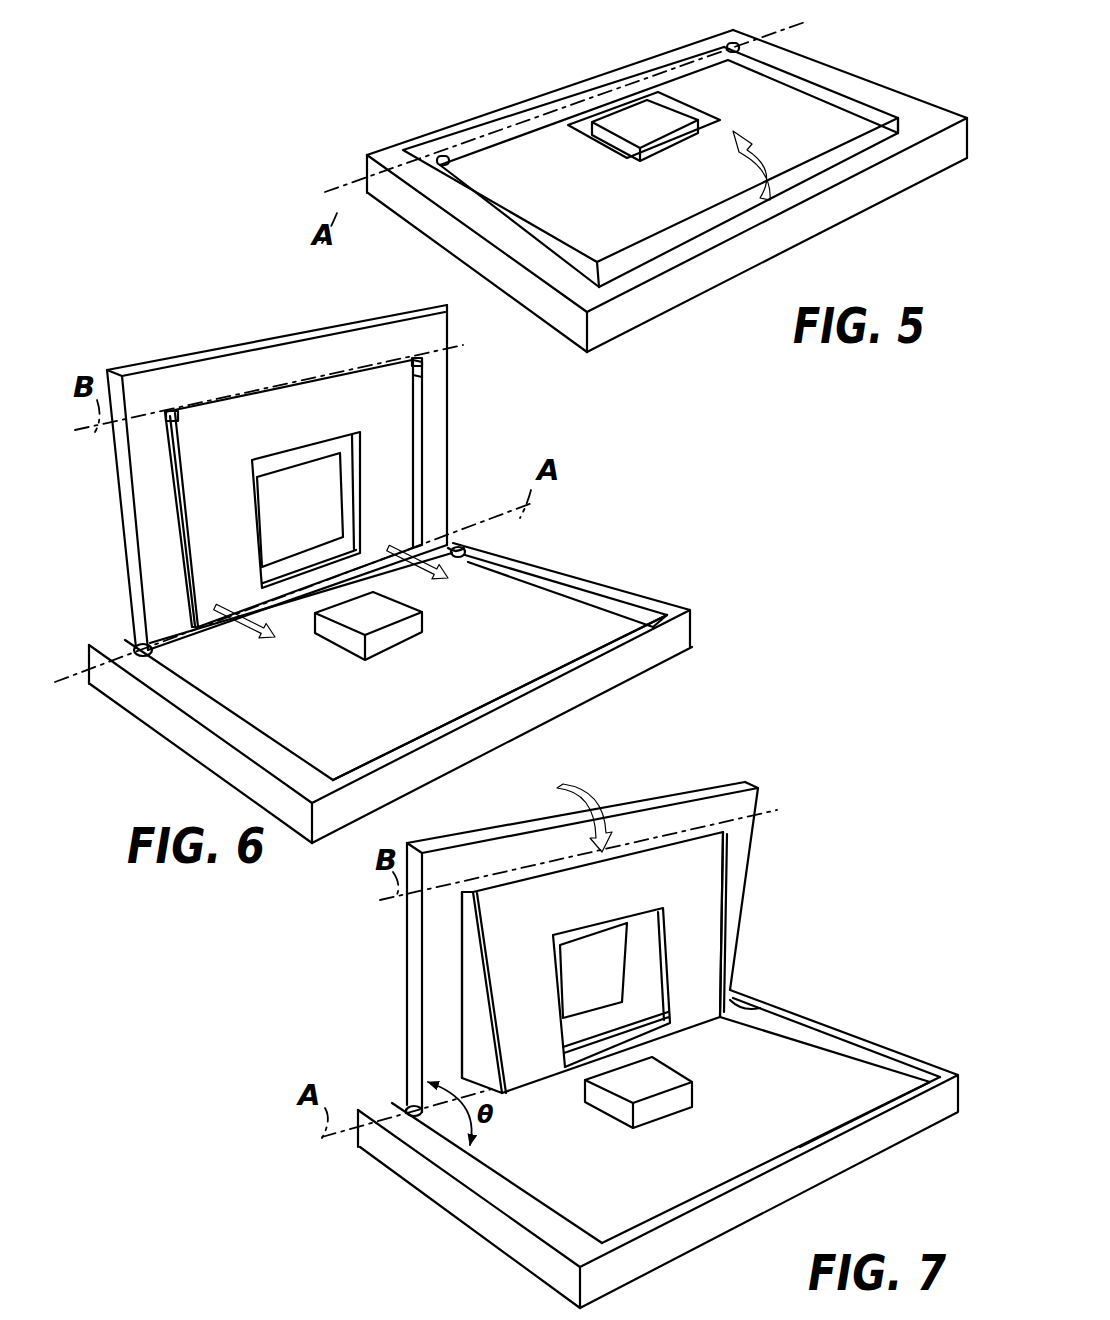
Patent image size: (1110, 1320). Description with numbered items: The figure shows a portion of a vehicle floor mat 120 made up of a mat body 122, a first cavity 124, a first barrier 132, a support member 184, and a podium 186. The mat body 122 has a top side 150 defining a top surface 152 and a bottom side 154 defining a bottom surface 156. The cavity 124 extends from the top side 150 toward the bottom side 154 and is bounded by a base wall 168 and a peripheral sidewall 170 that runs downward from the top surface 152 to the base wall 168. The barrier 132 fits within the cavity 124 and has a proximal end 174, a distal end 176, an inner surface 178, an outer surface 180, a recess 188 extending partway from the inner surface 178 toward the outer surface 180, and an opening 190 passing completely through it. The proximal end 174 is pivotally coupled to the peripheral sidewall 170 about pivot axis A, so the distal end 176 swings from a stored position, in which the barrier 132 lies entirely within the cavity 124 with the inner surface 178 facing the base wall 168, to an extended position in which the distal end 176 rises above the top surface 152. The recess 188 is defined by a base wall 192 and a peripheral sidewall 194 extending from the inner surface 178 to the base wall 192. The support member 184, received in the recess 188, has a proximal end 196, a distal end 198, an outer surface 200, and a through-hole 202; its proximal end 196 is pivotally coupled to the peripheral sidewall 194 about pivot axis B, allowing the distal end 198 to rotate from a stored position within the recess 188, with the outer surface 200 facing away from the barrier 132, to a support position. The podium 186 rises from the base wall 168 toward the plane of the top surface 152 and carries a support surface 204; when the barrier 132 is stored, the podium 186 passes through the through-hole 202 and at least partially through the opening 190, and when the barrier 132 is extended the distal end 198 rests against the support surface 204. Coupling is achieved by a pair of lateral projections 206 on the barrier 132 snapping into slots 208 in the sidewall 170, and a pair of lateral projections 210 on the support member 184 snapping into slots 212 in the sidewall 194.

In FIG. 5, the vehicle floor mat 120 is at (510, 63).
In FIG. 5, the mat body 122 is at (365, 167).
In FIG. 6, the mat body 122 is at (692, 627).
In FIG. 7, the mat body 122 is at (430, 1190).
In FIG. 5, the first cavity 124 is at (824, 83).
In FIG. 6, the first cavity 124 is at (568, 641).
In FIG. 7, the first cavity 124 is at (679, 1192).
In FIG. 5, the first barrier 132 is at (655, 252).
In FIG. 6, the first barrier 132 is at (188, 357).
In FIG. 7, the first barrier 132 is at (748, 782).
In FIG. 5, the top side 150 is at (396, 148).
In FIG. 6, the top side 150 is at (672, 605).
In FIG. 5, the top surface 152 is at (553, 273).
In FIG. 6, the top surface 152 is at (247, 738).
In FIG. 7, the top surface 152 is at (533, 1215).
In FIG. 5, the bottom side 154 is at (425, 240).
In FIG. 6, the bottom side 154 is at (135, 719).
In FIG. 5, the bottom surface 156 is at (630, 332).
In FIG. 5, the base wall 168 is at (897, 150).
In FIG. 6, the base wall 168 is at (368, 732).
In FIG. 7, the base wall 168 is at (635, 1206).
In FIG. 5, the peripheral sidewall 170 is at (906, 128).
In FIG. 6, the peripheral sidewall 170 is at (607, 605).
In FIG. 7, the peripheral sidewall 170 is at (857, 1060).
In FIG. 5, the proximal end 174 is at (617, 80).
In FIG. 6, the proximal end 174 is at (204, 648).
In FIG. 5, the distal end 176 is at (805, 180).
In FIG. 6, the distal end 176 is at (260, 340).
In FIG. 6, the inner surface 178 is at (313, 374).
In FIG. 7, the inner surface 178 is at (518, 848).
In FIG. 5, the outer surface 180 is at (643, 209).
In FIG. 6, the support member 184 is at (412, 458).
In FIG. 7, the support member 184 is at (717, 907).
In FIG. 5, the podium 186 is at (592, 130).
In FIG. 6, the podium 186 is at (405, 648).
In FIG. 7, the podium 186 is at (670, 1112).
In FIG. 6, the recess 188 is at (178, 464).
In FIG. 7, the recess 188 is at (465, 980).
In FIG. 5, the opening 190 is at (690, 118).
In FIG. 6, the opening 190 is at (340, 472).
In FIG. 7, the opening 190 is at (625, 943).
In FIG. 7, the base wall 192 is at (477, 1034).
In FIG. 6, the peripheral sidewall 194 is at (415, 497).
In FIG. 7, the peripheral sidewall 194 is at (718, 845).
In FIG. 6, the proximal end 196 is at (347, 366).
In FIG. 7, the proximal end 196 is at (470, 926).
In FIG. 6, the distal end 198 is at (274, 596).
In FIG. 7, the distal end 198 is at (523, 1105).
In FIG. 6, the outer surface 200 is at (326, 427).
In FIG. 7, the outer surface 200 is at (628, 907).
In FIG. 6, the through-hole 202 is at (353, 503).
In FIG. 7, the through-hole 202 is at (558, 983).
In FIG. 5, the support surface 204 is at (645, 132).
In FIG. 6, the support surface 204 is at (398, 621).
In FIG. 7, the support surface 204 is at (663, 1072).
In FIG. 5, the lateral projections 206 is at (437, 157).
In FIG. 6, the lateral projections 206 is at (130, 642).
In FIG. 6, the slots 208 is at (462, 547).
In FIG. 7, the slots 208 is at (760, 1008).
In FIG. 6, the lateral projections 210 is at (174, 415).
In FIG. 6, the slots 212 is at (413, 362).